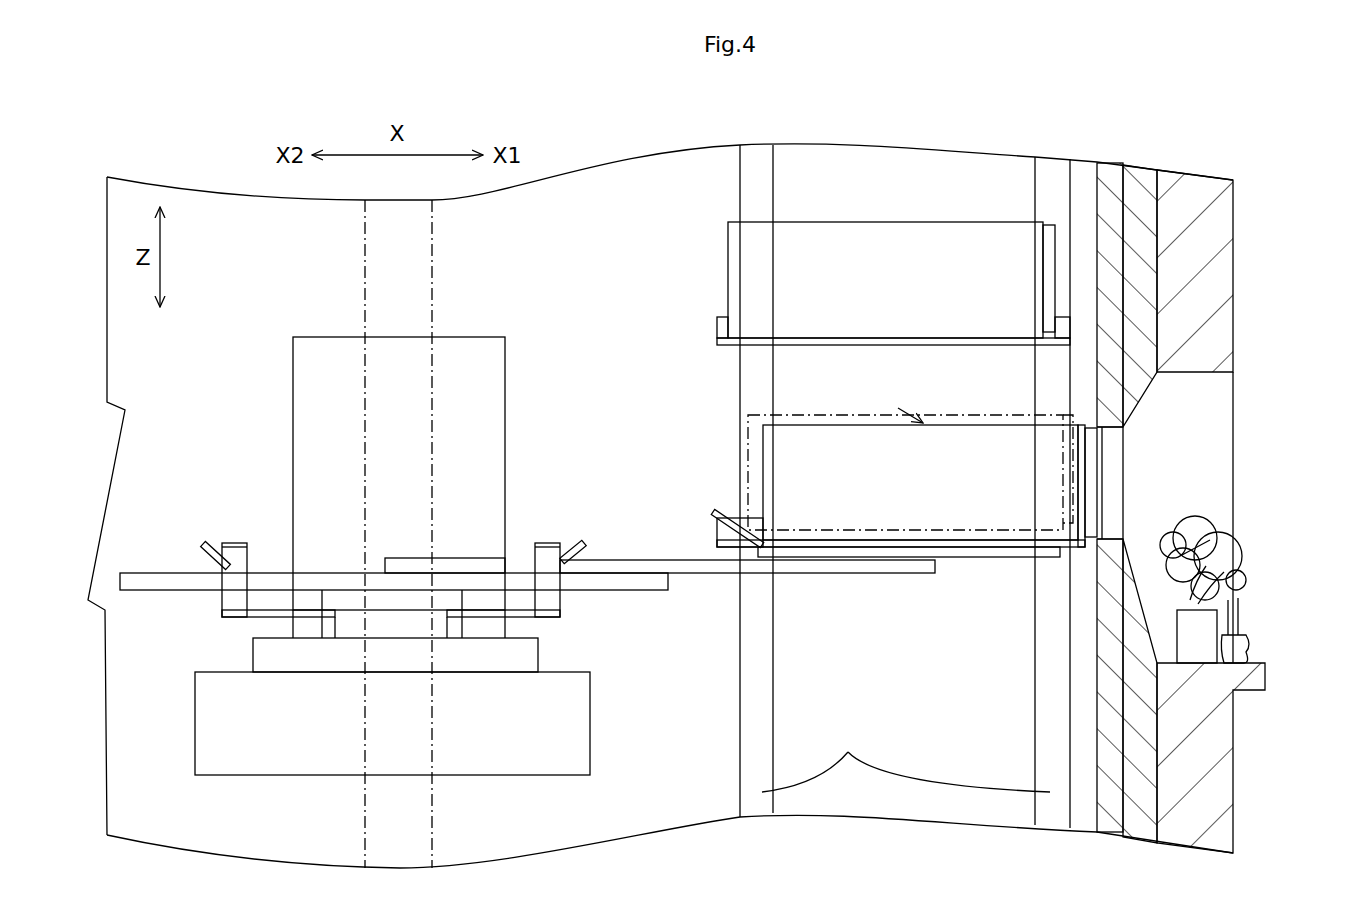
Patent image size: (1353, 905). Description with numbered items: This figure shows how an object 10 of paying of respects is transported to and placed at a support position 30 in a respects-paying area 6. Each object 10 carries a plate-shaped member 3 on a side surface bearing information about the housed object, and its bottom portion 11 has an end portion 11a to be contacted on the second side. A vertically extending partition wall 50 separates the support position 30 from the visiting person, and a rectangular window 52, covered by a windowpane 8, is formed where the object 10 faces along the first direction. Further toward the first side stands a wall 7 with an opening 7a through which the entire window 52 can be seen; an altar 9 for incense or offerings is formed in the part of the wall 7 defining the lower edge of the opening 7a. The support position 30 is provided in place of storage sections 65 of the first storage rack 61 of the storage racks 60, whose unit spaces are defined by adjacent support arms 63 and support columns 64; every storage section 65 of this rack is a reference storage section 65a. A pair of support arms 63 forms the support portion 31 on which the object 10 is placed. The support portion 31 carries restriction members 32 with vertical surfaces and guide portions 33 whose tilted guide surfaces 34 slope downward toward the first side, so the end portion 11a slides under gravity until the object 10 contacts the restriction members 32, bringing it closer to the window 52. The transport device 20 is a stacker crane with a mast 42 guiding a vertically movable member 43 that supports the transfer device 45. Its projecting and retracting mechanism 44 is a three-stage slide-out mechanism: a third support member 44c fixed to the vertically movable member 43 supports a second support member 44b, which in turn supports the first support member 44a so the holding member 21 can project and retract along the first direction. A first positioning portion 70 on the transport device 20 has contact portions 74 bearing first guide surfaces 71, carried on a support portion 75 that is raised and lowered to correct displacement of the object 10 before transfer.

The plate-shaped member 3 is at (1057, 238).
The respects-paying area 6 is at (1270, 277).
The wall 7 is at (1209, 472).
The opening 7a is at (1210, 375).
The windowpane 8 is at (1102, 478).
The altar 9 is at (1265, 678).
The object of paying of respects 10 is at (887, 237).
The bottom portion 11 is at (947, 530).
The end portion to be contacted 11a is at (722, 560).
The transport device 20 is at (262, 425).
The holding member 21 is at (1013, 573).
The support position 30 is at (793, 472).
The support portion 31 is at (870, 338).
The restriction member 32 is at (1127, 537).
The guide portion 33 is at (712, 530).
The tilted guide surface 34 is at (727, 512).
The mast 42 is at (432, 277).
The vertically movable member 43 is at (222, 755).
The projecting and retracting mechanism 44 is at (439, 508).
The first support member 44a is at (794, 635).
The second support member 44b is at (858, 557).
The third support member 44c is at (313, 573).
The transfer device 45 is at (418, 553).
The partition wall 50 is at (1110, 172).
The window 52 is at (1117, 433).
The storage rack 60 is at (908, 135).
The first storage rack 61 is at (905, 447).
The support arm 63 is at (901, 486).
The support column 64 is at (906, 760).
The storage section 65 is at (748, 287).
The reference storage section 65a is at (838, 276).
The first positioning portion 70 is at (222, 605).
The first guide surface 71 is at (212, 543).
The contact portion 74 is at (405, 612).
The support portion 75 is at (348, 632).